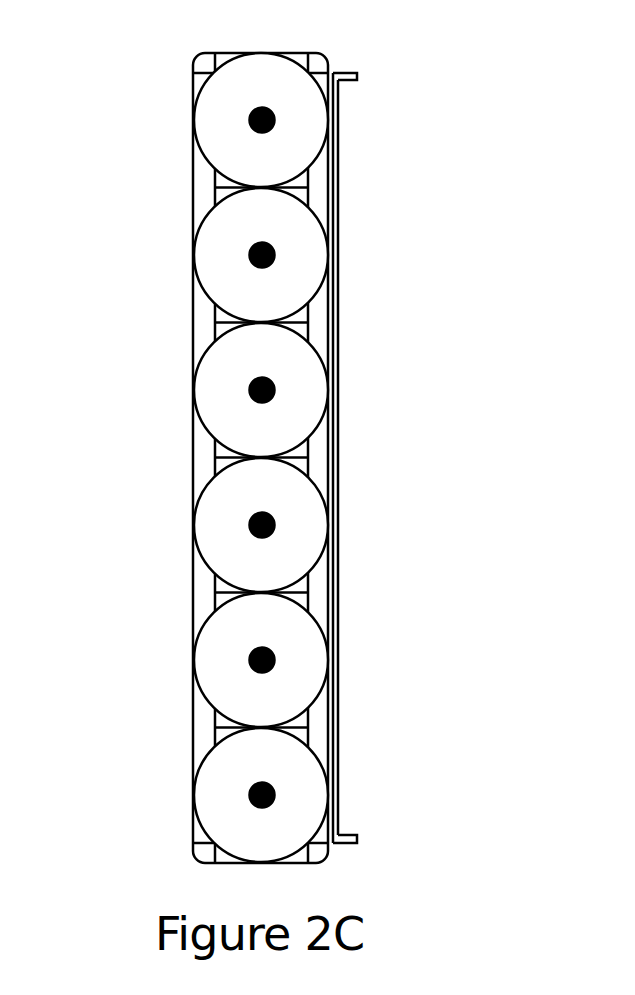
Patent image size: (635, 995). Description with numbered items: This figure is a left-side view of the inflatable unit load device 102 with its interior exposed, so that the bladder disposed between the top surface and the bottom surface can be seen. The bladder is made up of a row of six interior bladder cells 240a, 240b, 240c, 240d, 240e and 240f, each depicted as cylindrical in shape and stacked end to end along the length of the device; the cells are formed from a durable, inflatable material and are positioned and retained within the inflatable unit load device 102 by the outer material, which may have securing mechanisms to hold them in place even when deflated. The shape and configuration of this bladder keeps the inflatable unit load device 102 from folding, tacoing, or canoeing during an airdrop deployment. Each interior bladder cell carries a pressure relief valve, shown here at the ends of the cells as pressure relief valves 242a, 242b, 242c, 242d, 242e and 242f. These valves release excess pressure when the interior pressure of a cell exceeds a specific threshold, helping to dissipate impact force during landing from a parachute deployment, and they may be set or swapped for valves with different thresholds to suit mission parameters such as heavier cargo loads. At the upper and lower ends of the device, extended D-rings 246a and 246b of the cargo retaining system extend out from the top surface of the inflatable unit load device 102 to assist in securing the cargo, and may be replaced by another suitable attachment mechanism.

The inflatable unit load device 102 is at (102, 128).
The interior bladder cell 240a is at (208, 133).
The interior bladder cell 240b is at (205, 268).
The interior bladder cell 240c is at (208, 395).
The interior bladder cell 240d is at (200, 532).
The interior bladder cell 240e is at (200, 657).
The interior bladder cell 240f is at (208, 802).
The pressure relief valve 242a is at (262, 120).
The pressure relief valve 242b is at (262, 255).
The pressure relief valve 242c is at (262, 390).
The pressure relief valve 242d is at (262, 525).
The pressure relief valve 242e is at (262, 660).
The pressure relief valve 242f is at (262, 795).
The extended D-ring 246a is at (357, 73).
The extended D-ring 246b is at (357, 835).